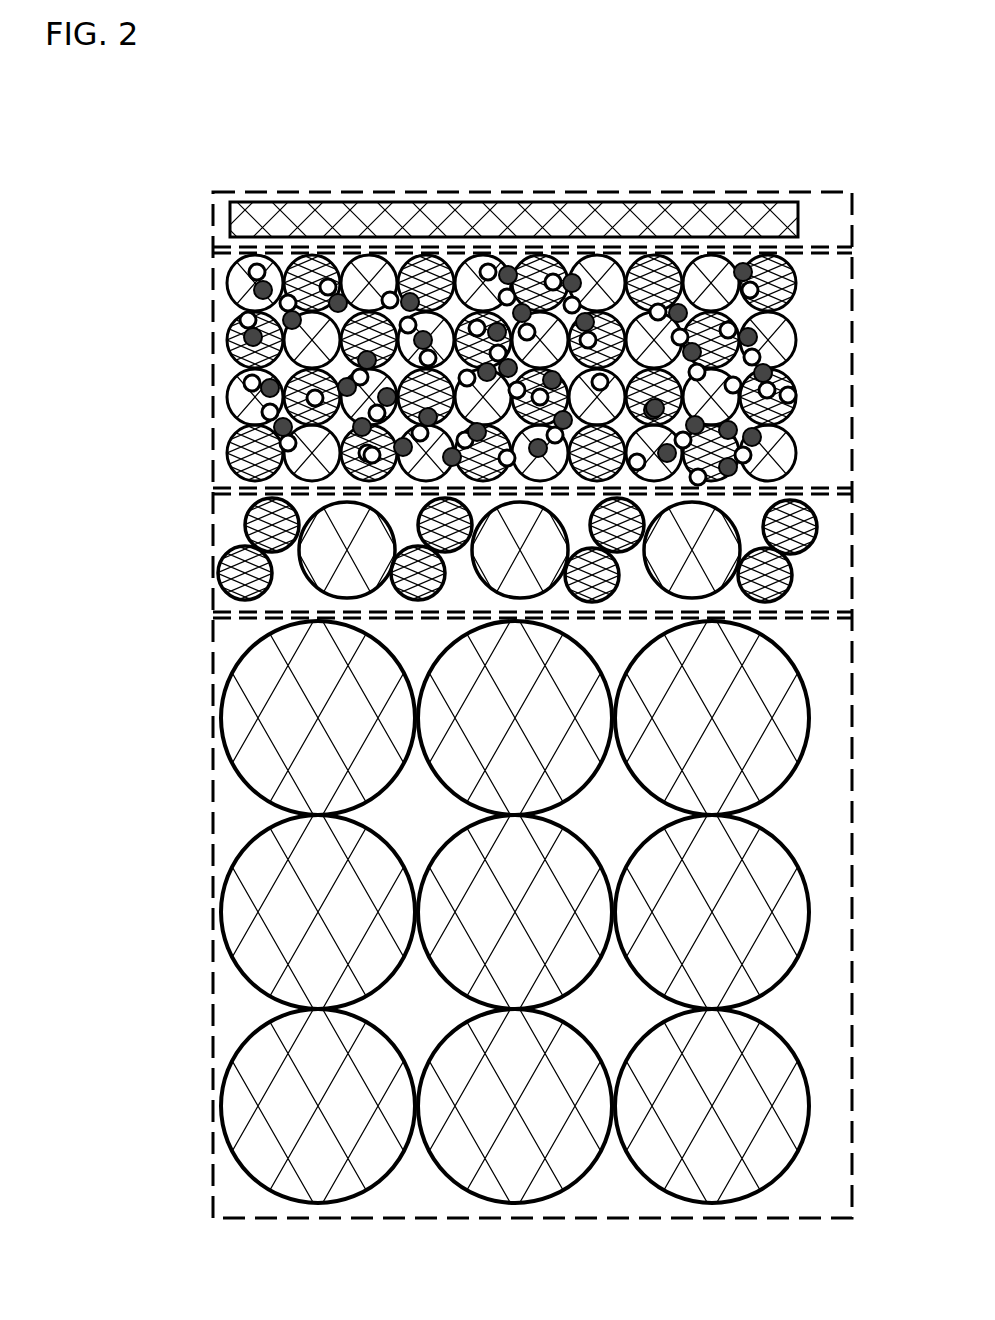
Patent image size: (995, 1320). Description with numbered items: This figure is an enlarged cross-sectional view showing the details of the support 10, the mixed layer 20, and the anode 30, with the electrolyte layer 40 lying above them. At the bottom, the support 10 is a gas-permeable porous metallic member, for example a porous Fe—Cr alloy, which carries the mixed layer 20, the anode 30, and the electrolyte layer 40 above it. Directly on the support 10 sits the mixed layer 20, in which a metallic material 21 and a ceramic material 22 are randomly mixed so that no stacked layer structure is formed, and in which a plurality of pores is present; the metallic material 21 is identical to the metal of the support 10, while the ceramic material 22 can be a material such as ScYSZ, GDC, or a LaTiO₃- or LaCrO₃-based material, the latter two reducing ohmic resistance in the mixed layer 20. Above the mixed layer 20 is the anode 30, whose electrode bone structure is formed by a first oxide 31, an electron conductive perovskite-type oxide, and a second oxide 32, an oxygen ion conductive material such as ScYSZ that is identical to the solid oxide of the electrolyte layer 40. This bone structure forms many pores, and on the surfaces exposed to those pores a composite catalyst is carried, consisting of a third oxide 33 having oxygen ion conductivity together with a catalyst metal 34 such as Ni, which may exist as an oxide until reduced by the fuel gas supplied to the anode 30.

The support 10 is at (852, 738).
The mixed layer 20 is at (522, 553).
The metallic material 21 is at (318, 568).
The ceramic material 22 is at (805, 521).
The anode 30 is at (534, 370).
The first oxide 31 is at (782, 279).
The second oxide 32 is at (790, 338).
The third oxide 33 is at (252, 282).
The catalyst metal 34 is at (246, 337).
The electrolyte layer 40 is at (732, 212).